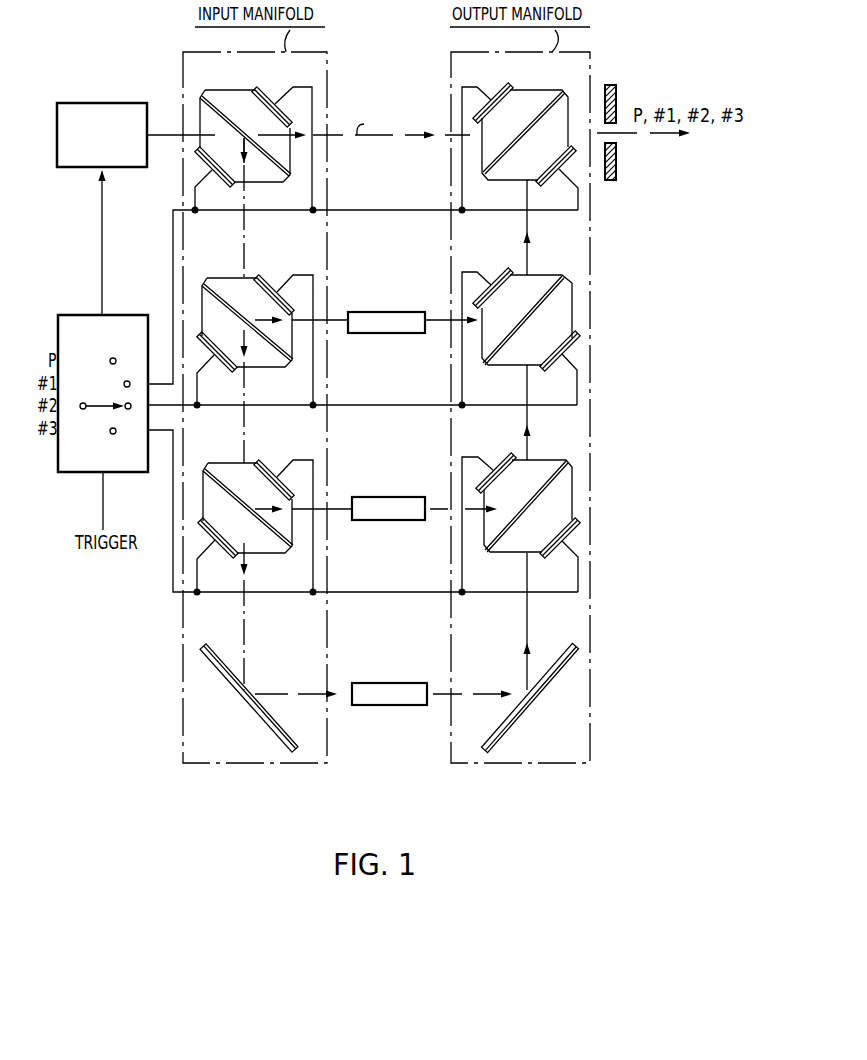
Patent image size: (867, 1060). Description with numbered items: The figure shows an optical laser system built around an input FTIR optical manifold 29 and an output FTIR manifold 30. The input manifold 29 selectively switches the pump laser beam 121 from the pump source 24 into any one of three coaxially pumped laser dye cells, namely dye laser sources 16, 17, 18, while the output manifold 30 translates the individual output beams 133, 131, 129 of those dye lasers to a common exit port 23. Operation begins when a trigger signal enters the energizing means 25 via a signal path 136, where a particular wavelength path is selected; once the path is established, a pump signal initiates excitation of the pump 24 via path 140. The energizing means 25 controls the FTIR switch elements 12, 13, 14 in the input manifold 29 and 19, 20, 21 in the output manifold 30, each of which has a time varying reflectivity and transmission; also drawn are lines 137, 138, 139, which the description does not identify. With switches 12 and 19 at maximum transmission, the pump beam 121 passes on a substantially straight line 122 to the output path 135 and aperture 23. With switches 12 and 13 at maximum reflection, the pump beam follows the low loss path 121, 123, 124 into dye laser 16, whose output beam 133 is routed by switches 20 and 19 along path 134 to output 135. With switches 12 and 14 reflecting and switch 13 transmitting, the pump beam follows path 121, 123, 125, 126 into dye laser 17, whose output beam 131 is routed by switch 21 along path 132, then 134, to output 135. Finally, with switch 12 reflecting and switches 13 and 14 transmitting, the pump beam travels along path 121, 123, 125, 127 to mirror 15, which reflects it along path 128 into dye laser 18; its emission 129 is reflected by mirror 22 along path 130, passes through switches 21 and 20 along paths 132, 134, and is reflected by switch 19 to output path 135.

The FTIR switch element 12 is at (232, 90).
The FTIR switch element 13 is at (221, 278).
The FTIR switch element 14 is at (223, 463).
The mirror 15 is at (244, 705).
The dye laser source 16 is at (377, 333).
The dye laser source 17 is at (388, 521).
The dye laser source 18 is at (383, 705).
The FTIR switch element 19 is at (550, 90).
The FTIR switch element 20 is at (521, 322).
The FTIR switch element 21 is at (560, 460).
The mirror 22 is at (518, 712).
The common exit port 23 is at (610, 182).
The pump source 24 is at (107, 103).
The energizing means 25 is at (118, 315).
The FTIR optical manifold 29 is at (329, 64).
The FTIR manifold 30 is at (451, 64).
The pump laser beam 121 is at (158, 137).
The straight line path 122 is at (376, 137).
The low loss path 123 is at (244, 224).
The low loss path 124 is at (337, 323).
The low loss path 125 is at (246, 433).
The low loss path 126 is at (337, 511).
The low loss path 127 is at (245, 621).
The low loss path 128 is at (312, 691).
The output beam of dye laser 18 129 is at (506, 691).
The path 130 is at (526, 636).
The output beam of dye laser 17 131 is at (436, 507).
The low loss path 132 is at (527, 393).
The output beam of dye laser 16 133 is at (436, 318).
The low loss path 134 is at (505, 227).
The output path 135 is at (657, 137).
The signal path 136 is at (104, 499).
The trigger bus line 137 is at (399, 210).
The trigger bus line 138 is at (410, 404).
The trigger bus line 139 is at (403, 592).
The path 140 is at (103, 226).